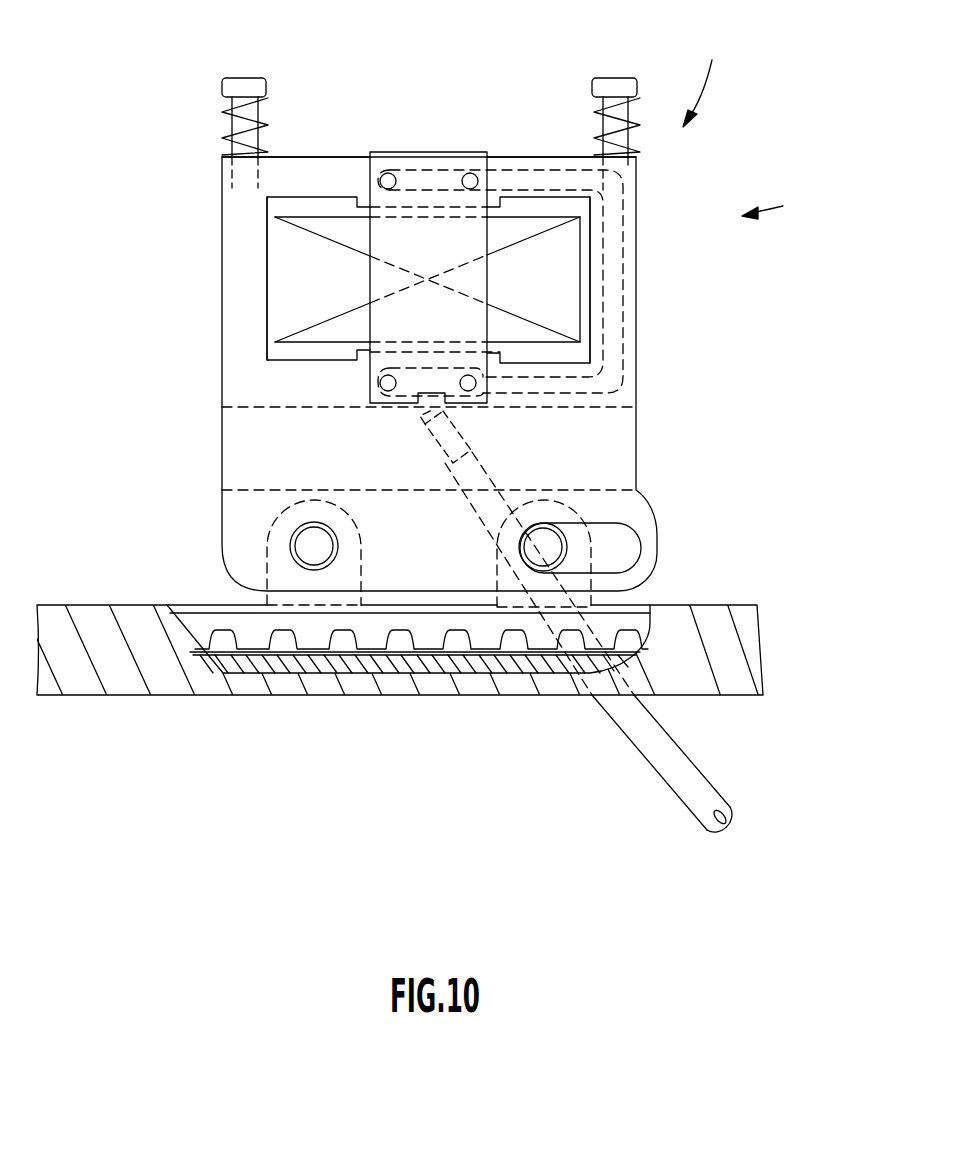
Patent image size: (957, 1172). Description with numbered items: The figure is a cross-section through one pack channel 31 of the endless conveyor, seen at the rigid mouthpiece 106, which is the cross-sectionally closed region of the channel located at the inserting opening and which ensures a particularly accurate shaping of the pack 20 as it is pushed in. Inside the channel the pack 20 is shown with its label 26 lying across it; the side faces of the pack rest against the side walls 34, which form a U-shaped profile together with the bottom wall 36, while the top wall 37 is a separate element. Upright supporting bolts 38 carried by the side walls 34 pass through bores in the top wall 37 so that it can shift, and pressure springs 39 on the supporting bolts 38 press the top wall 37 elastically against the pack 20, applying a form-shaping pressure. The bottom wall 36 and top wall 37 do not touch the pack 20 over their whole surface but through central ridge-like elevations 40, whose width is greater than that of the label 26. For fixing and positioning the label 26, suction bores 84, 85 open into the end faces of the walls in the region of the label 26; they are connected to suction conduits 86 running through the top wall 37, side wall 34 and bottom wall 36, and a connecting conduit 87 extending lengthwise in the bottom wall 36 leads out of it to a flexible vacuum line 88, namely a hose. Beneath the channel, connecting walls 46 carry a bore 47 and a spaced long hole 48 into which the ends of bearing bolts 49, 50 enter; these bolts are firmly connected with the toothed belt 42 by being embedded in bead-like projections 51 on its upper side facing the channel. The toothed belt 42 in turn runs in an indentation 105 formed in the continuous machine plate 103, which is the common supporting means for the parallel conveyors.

The pack 20 is at (298, 243).
The label 26 is at (405, 152).
The pack channel 31 is at (708, 76).
The side wall 34 is at (240, 262).
The bottom wall 36 is at (305, 398).
The top wall 37 is at (323, 160).
The supporting bolt 38 is at (232, 80).
The pressure spring 39 is at (264, 118).
The ridge-like elevation 40 is at (362, 192).
The toothed belt 42 is at (617, 625).
The connecting wall 46 is at (620, 436).
The bore 47 is at (292, 563).
The long hole 48 is at (622, 543).
The bearing bolt 49 is at (308, 545).
The bearing bolt 50 is at (550, 543).
The bead-like projection 51 is at (373, 608).
The suction bore 84 is at (394, 180).
The suction bore 85 is at (386, 383).
The suction conduit 86 is at (627, 395).
The connecting conduit 87 is at (420, 420).
The flexible vacuum line 88 is at (665, 745).
The machine plate 103 is at (90, 683).
The indentation 105 is at (290, 657).
The mouthpiece 106 is at (781, 203).